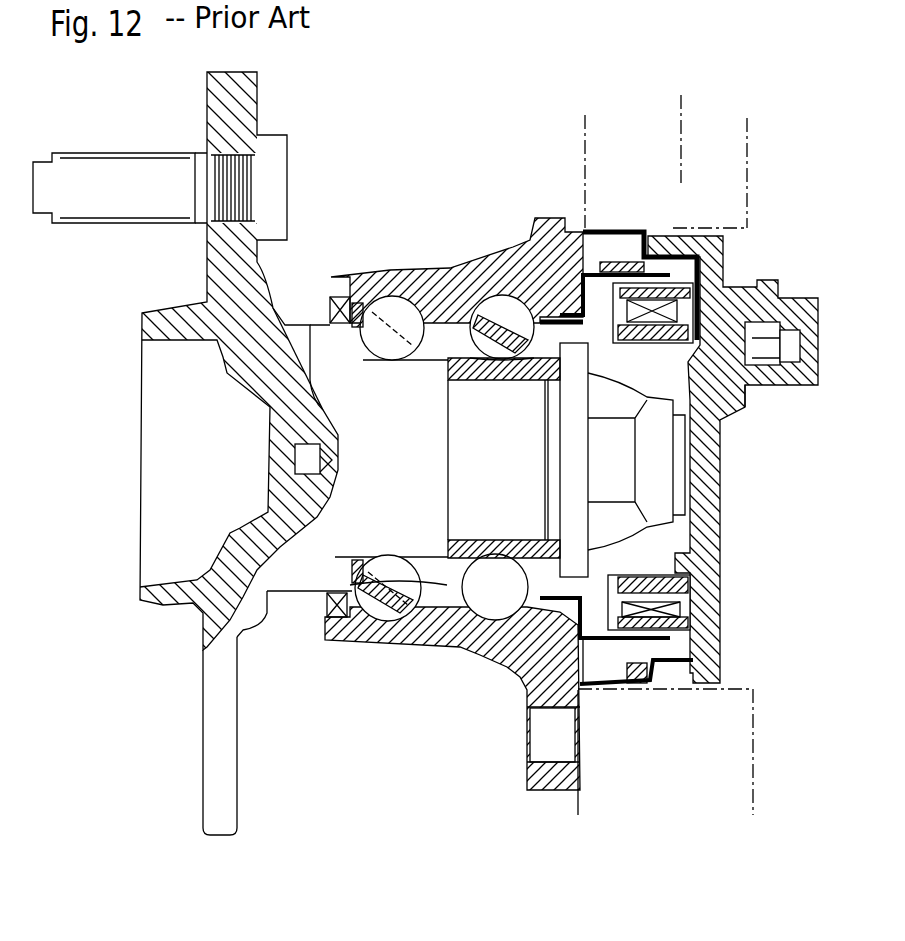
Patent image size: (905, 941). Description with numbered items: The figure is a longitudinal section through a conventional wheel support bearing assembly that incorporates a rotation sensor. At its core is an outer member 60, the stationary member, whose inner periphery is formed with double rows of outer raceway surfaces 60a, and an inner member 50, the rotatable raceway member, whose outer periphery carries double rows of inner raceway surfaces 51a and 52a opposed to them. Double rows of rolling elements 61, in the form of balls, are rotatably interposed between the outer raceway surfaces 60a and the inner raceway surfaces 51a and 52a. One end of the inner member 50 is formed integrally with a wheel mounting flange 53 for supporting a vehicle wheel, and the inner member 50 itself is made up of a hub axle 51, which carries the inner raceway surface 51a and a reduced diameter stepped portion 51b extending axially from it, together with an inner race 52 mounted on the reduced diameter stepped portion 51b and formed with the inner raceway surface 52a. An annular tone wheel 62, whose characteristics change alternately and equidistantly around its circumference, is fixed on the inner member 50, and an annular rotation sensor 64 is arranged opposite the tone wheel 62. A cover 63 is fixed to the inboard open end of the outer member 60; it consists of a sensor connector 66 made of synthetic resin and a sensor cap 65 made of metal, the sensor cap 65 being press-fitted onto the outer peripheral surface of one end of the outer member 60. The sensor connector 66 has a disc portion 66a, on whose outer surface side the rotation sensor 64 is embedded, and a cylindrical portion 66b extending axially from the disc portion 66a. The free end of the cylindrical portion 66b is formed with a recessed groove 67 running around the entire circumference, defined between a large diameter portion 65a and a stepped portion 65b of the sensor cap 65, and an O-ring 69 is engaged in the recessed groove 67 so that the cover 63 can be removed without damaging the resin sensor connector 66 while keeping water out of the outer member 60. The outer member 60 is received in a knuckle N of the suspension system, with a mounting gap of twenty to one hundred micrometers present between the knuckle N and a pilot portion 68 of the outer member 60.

The inner member 50 is at (341, 425).
The hub axle 51 is at (232, 358).
The inner raceway surface 51a is at (355, 578).
The reduced diameter stepped portion 51b is at (455, 540).
The inner race 52 is at (472, 385).
The inner raceway surface 52a is at (513, 348).
The wheel mounting flange 53 is at (215, 102).
The outer member 60 is at (487, 280).
The outer raceway surfaces 60a is at (400, 617).
The rolling elements 61 is at (332, 582).
The tone wheel 62 is at (525, 673).
The cover 63 is at (713, 548).
The rotation sensor 64 is at (575, 263).
The sensor cap 65 is at (697, 227).
The large diameter portion 65a is at (607, 690).
The stepped portion 65b is at (620, 693).
The sensor connector 66 is at (708, 470).
The disc portion 66a is at (712, 620).
The cylindrical portion 66b is at (677, 675).
The recessed groove 67 is at (638, 227).
The pilot portion 68 is at (618, 227).
The O-ring 69 is at (637, 227).
The knuckle N is at (665, 441).